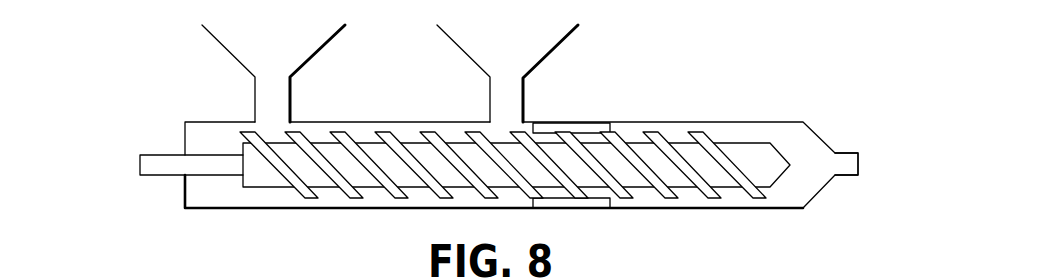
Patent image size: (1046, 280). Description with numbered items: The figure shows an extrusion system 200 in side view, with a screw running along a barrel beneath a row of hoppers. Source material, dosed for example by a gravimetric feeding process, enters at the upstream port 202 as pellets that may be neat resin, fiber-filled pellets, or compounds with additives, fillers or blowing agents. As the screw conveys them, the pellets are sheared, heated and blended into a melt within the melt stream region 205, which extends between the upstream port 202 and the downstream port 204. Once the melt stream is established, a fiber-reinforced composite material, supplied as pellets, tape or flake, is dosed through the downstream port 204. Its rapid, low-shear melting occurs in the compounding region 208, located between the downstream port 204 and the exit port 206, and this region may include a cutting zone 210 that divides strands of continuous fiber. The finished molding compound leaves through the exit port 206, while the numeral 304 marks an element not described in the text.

The extrusion system 200 is at (108, 105).
The upstream port 202 is at (228, 54).
The downstream port 204 is at (462, 50).
The melt stream region 205 is at (382, 205).
The exit port 206 is at (845, 153).
The compounding region 208 is at (647, 210).
The cutting zone 210 is at (583, 128).
The drive shaft 304 is at (168, 217).